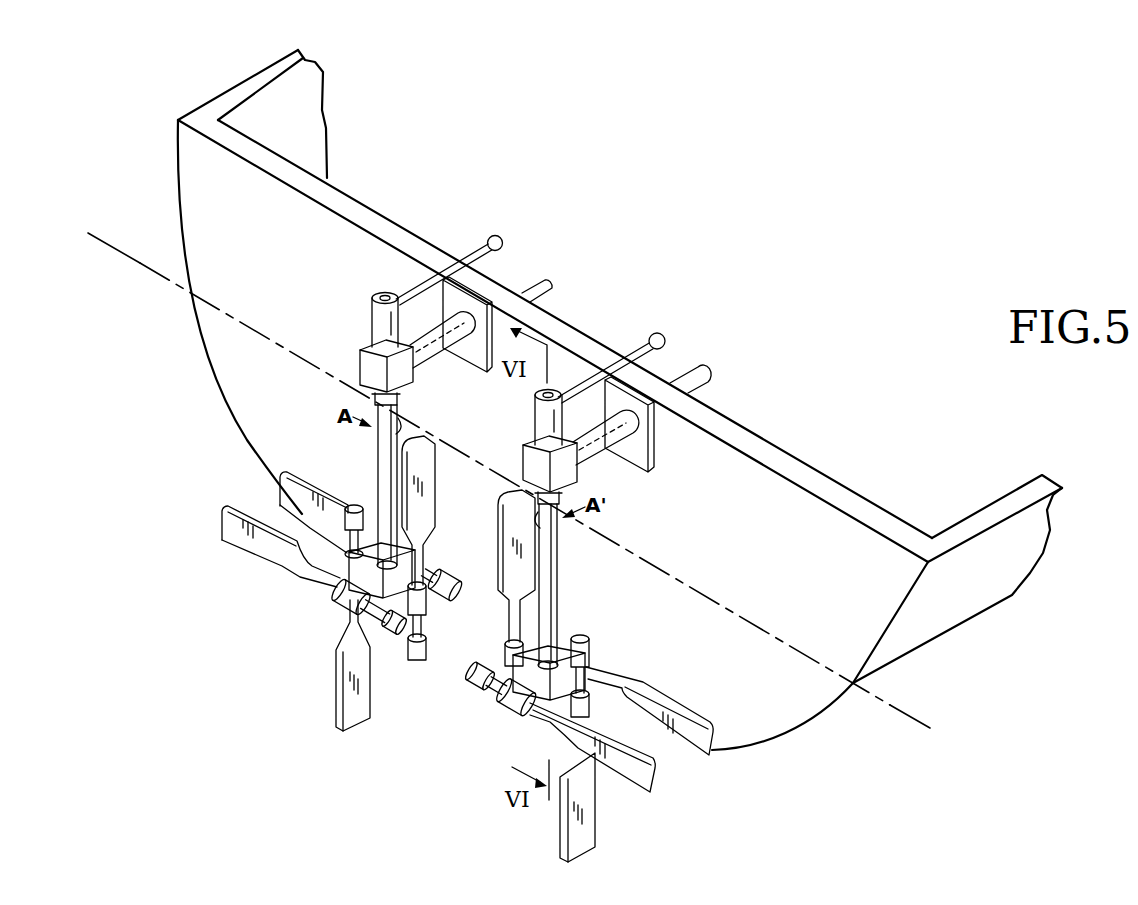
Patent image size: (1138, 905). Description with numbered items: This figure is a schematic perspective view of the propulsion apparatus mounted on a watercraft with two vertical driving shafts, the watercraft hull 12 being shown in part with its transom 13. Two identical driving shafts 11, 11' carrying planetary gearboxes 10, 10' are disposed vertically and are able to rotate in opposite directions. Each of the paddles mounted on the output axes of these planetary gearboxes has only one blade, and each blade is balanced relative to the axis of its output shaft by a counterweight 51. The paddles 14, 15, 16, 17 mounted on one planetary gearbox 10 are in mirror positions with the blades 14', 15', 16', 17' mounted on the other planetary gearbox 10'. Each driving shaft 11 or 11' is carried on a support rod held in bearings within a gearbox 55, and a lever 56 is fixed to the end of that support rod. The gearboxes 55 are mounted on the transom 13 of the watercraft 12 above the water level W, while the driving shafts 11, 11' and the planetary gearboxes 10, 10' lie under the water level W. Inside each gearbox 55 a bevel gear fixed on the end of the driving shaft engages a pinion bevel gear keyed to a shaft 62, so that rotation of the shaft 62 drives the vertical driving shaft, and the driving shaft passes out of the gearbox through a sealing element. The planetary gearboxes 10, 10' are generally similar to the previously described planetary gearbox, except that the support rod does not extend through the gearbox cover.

The planetary gearbox 10 is at (368, 590).
The planetary gearbox 10' is at (580, 647).
The driving shaft 11 is at (348, 485).
The driving shaft 11' is at (620, 584).
The trough / tank 12 is at (947, 612).
The transom 13 is at (803, 700).
The paddle 14 is at (321, 665).
The blade 14' is at (632, 807).
The paddle 15 is at (444, 502).
The blade 15' is at (494, 566).
The paddle 16 is at (274, 553).
The blade 16' is at (647, 767).
The paddle 17 is at (270, 491).
The blade 17' is at (691, 727).
The counterweight 51 is at (356, 508).
The gearbox 55 is at (377, 372).
The lever 56 is at (474, 247).
The shaft 62 is at (550, 285).
The water level W is at (510, 482).